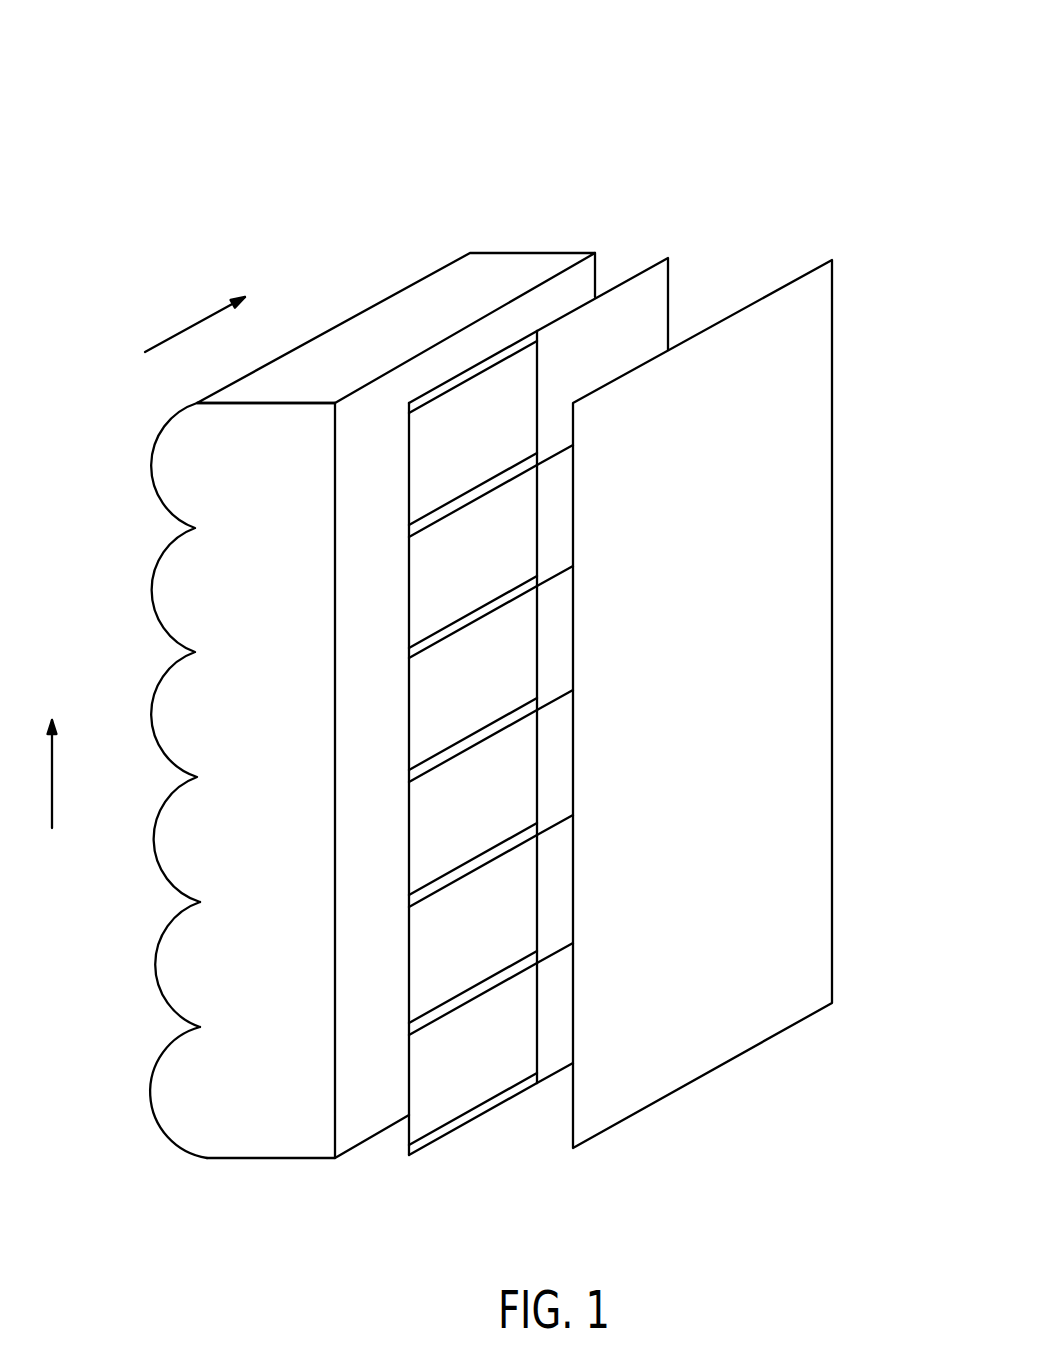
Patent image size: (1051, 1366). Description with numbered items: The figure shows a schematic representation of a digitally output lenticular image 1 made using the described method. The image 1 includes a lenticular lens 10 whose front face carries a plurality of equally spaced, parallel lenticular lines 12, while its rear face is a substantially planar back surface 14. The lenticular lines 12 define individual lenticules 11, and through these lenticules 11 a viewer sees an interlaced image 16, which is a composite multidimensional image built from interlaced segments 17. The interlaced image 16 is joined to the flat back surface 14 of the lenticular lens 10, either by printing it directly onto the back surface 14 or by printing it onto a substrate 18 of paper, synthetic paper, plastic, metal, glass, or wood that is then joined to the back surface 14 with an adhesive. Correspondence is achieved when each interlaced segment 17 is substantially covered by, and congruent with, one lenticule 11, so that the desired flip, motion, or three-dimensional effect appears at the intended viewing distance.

The digitally output lenticular image 1 is at (653, 85).
The lenticular lens 10 is at (410, 286).
The lenticule 11 is at (152, 978).
The lenticular lines 12 is at (173, 643).
The back surface 14 is at (353, 1128).
The interlaced image 16 is at (634, 274).
The interlaced segment 17 is at (444, 458).
The substrate 18 is at (794, 276).